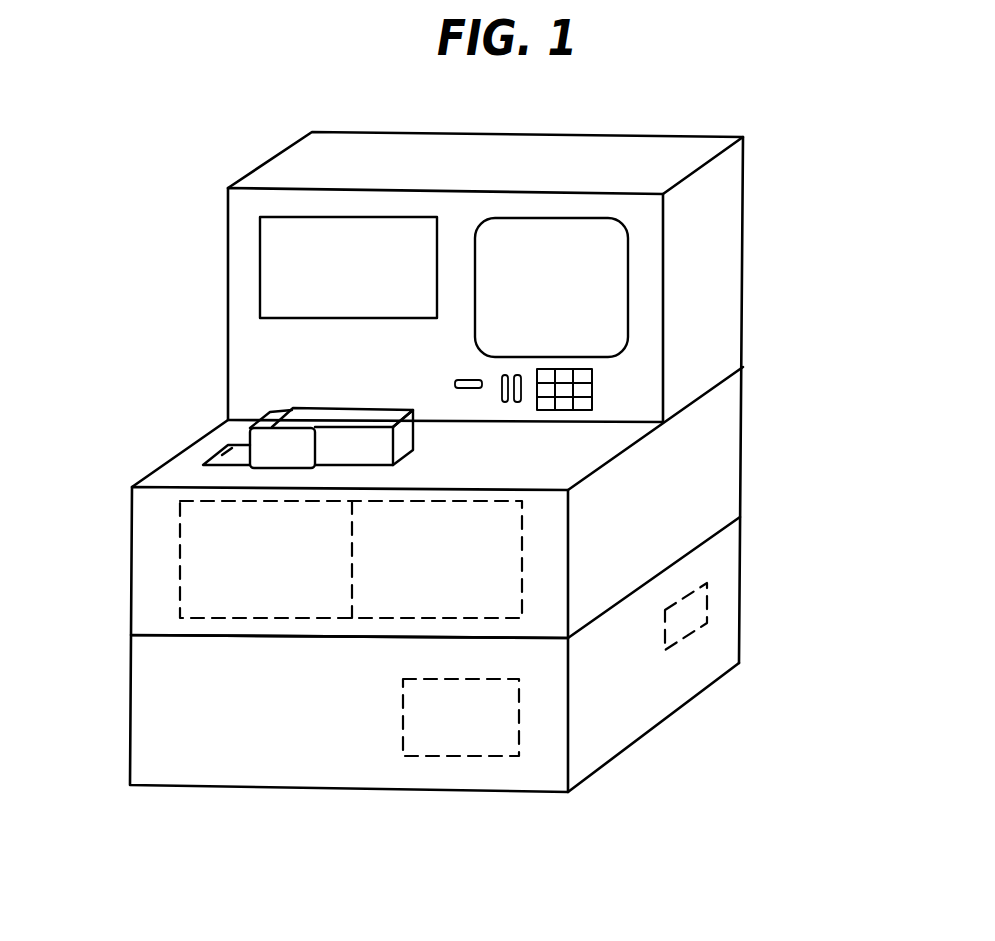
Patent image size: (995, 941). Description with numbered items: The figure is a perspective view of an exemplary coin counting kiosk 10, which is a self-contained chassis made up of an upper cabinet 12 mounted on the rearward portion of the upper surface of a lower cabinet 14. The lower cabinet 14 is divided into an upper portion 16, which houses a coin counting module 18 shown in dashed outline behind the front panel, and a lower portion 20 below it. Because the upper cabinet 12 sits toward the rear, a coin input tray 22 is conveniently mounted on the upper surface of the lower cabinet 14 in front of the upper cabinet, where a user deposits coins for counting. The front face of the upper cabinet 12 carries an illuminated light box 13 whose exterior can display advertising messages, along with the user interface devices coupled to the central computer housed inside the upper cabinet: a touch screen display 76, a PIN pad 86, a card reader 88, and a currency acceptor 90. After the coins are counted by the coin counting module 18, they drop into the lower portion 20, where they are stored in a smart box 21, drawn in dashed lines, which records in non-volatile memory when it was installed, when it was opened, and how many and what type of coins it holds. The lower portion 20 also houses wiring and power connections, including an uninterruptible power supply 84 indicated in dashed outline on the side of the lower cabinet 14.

The coin counting kiosk 10 is at (266, 112).
The upper cabinet 12 is at (768, 227).
The illuminated light box 13 is at (366, 283).
The lower cabinet 14 is at (766, 474).
The upper portion 16 is at (138, 528).
The coin counting module 18 is at (170, 589).
The lower portion 20 is at (138, 715).
The smart box 21 is at (482, 757).
The coin input tray 22 is at (353, 422).
The touch screen display 76 is at (570, 303).
The uninterruptible power supply 84 is at (688, 634).
The PIN pad 86 is at (592, 377).
The card reader 88 is at (505, 402).
The currency acceptor 90 is at (455, 383).